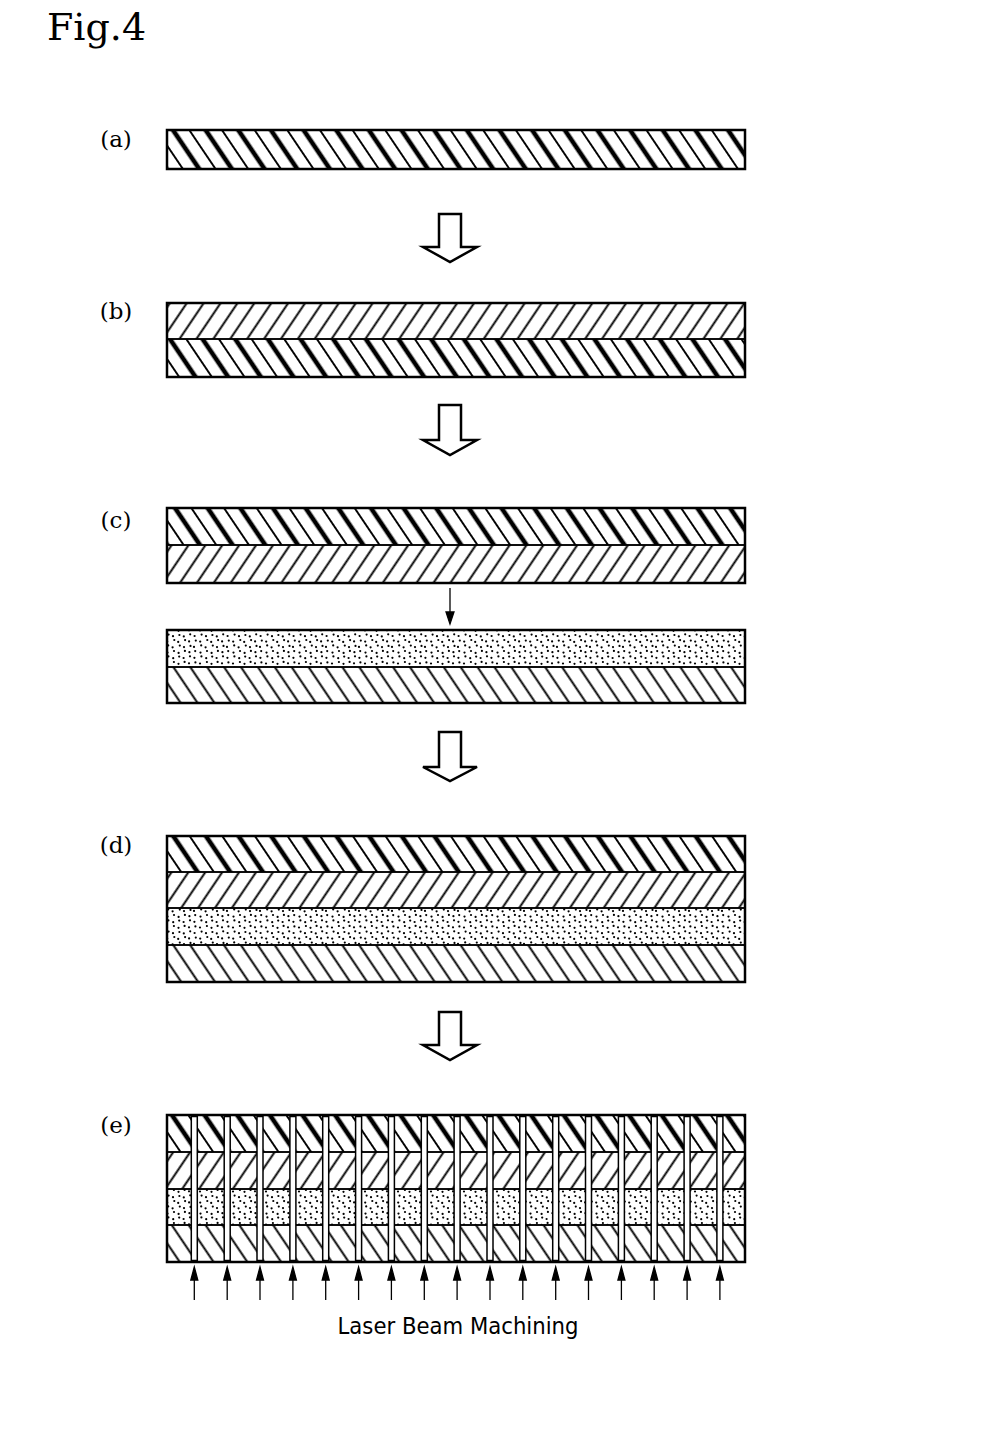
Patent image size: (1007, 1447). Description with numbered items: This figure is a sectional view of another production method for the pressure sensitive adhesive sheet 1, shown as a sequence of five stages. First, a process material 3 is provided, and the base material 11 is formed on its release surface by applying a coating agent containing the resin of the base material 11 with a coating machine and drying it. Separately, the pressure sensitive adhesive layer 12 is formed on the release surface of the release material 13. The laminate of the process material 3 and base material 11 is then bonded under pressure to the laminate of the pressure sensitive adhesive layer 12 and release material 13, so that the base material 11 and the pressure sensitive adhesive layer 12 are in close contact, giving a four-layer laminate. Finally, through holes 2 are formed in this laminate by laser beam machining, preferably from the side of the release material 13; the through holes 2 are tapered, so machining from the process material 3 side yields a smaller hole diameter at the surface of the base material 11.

The pressure sensitive adhesive sheet 1 is at (750, 1268).
The through holes 2 is at (654, 1116).
The process material 3 is at (746, 146).
The base material 11 is at (746, 320).
The pressure sensitive adhesive layer 12 is at (746, 645).
The release material 13 is at (746, 680).